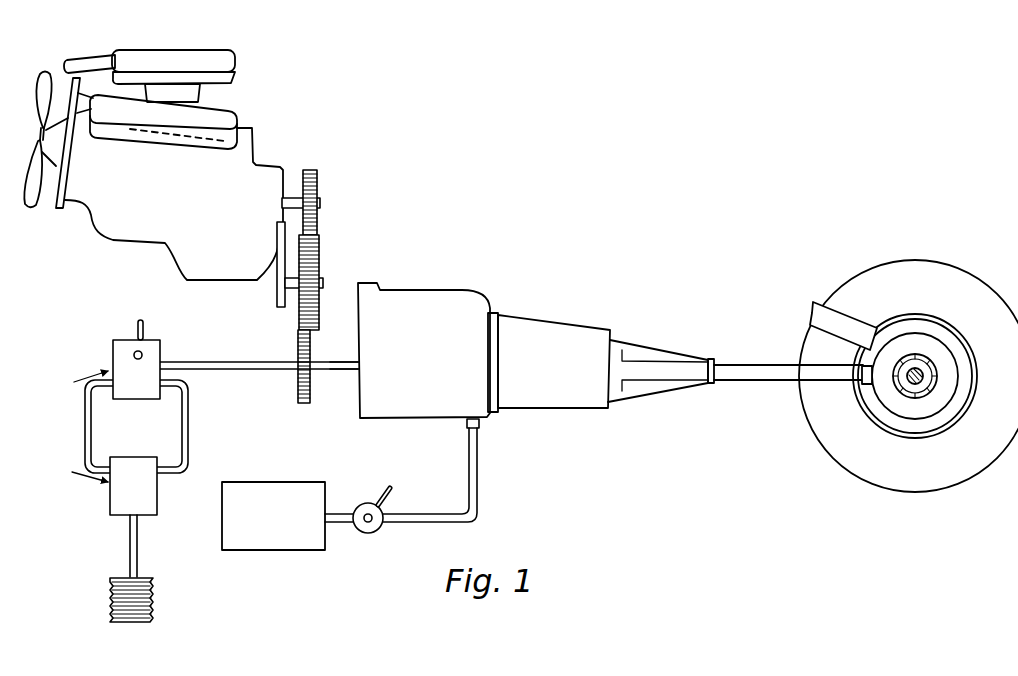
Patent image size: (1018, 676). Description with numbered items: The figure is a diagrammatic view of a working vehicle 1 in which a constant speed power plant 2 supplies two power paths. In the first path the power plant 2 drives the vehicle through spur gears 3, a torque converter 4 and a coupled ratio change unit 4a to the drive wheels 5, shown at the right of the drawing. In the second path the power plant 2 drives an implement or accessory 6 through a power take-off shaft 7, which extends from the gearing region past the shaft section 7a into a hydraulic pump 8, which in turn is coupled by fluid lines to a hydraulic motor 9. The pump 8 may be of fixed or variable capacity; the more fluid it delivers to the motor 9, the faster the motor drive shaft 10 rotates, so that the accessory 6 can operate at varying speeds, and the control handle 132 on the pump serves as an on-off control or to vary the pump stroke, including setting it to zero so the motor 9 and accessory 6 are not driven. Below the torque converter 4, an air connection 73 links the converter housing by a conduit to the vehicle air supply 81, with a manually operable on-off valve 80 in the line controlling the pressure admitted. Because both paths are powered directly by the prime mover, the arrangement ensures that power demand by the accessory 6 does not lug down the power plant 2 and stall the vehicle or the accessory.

The working vehicle 1 is at (818, 298).
The constant speed power plant 2 is at (100, 223).
The spur gears 3 is at (313, 342).
The torque converter 4 is at (489, 302).
The coupled ratio change unit 4a is at (586, 330).
The drive wheels 5 is at (934, 262).
The implement or accessory 6 is at (155, 592).
The power take-off shaft 7 is at (244, 368).
The shaft section 7a is at (342, 368).
The hydraulic pump 8 is at (125, 347).
The hydraulic motor 9 is at (115, 500).
The motor drive shaft 10 is at (137, 537).
The air line connection 73 is at (481, 428).
The manually operable on-off valve 80 is at (370, 534).
The vehicle air supply 81 is at (285, 545).
The pump control lever 132 is at (143, 330).